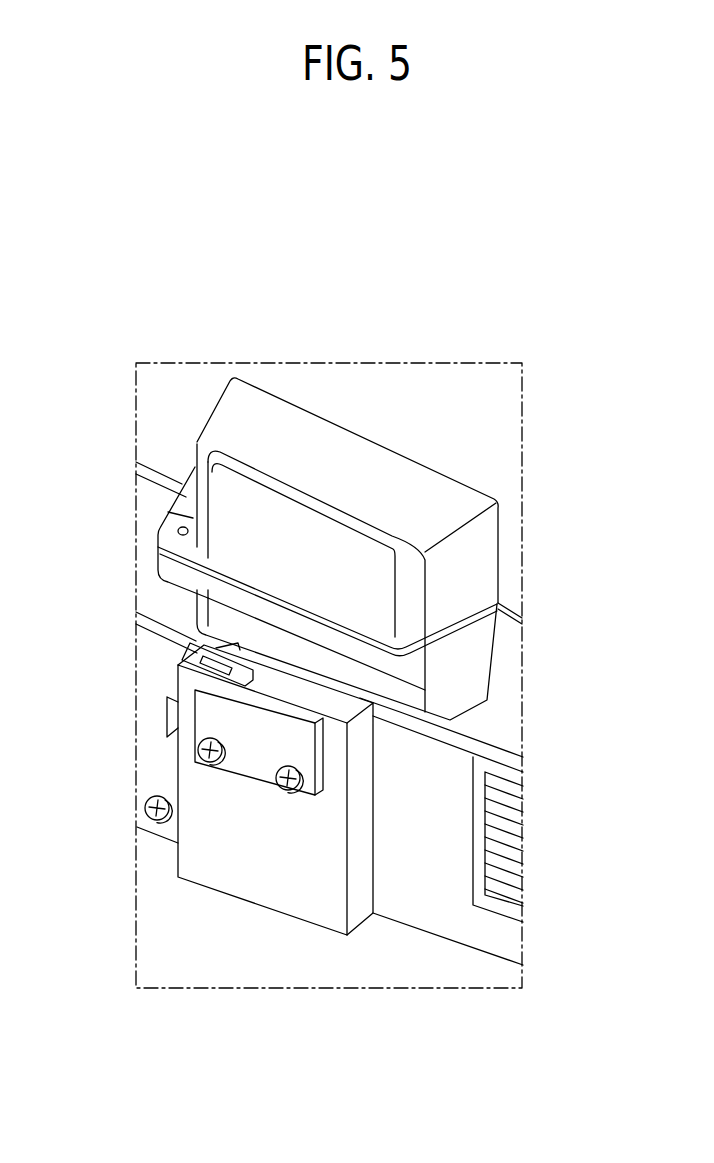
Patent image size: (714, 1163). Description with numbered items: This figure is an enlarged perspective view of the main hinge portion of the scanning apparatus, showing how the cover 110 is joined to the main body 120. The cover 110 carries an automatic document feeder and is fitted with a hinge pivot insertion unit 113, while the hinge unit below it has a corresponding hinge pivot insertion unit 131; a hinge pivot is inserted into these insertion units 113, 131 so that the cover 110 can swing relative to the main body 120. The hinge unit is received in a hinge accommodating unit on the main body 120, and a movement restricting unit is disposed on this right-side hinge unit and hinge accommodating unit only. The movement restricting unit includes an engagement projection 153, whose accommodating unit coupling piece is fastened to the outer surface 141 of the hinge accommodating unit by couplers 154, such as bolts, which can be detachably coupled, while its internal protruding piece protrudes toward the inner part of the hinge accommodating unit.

The cover 110 is at (461, 400).
The hinge pivot insertion unit 113 is at (287, 667).
The main body 120 is at (443, 917).
The hinge pivot insertion unit 131 is at (250, 689).
The outer surface 141 is at (238, 883).
The engagement projection 153 is at (287, 745).
The coupler 154 is at (278, 784).